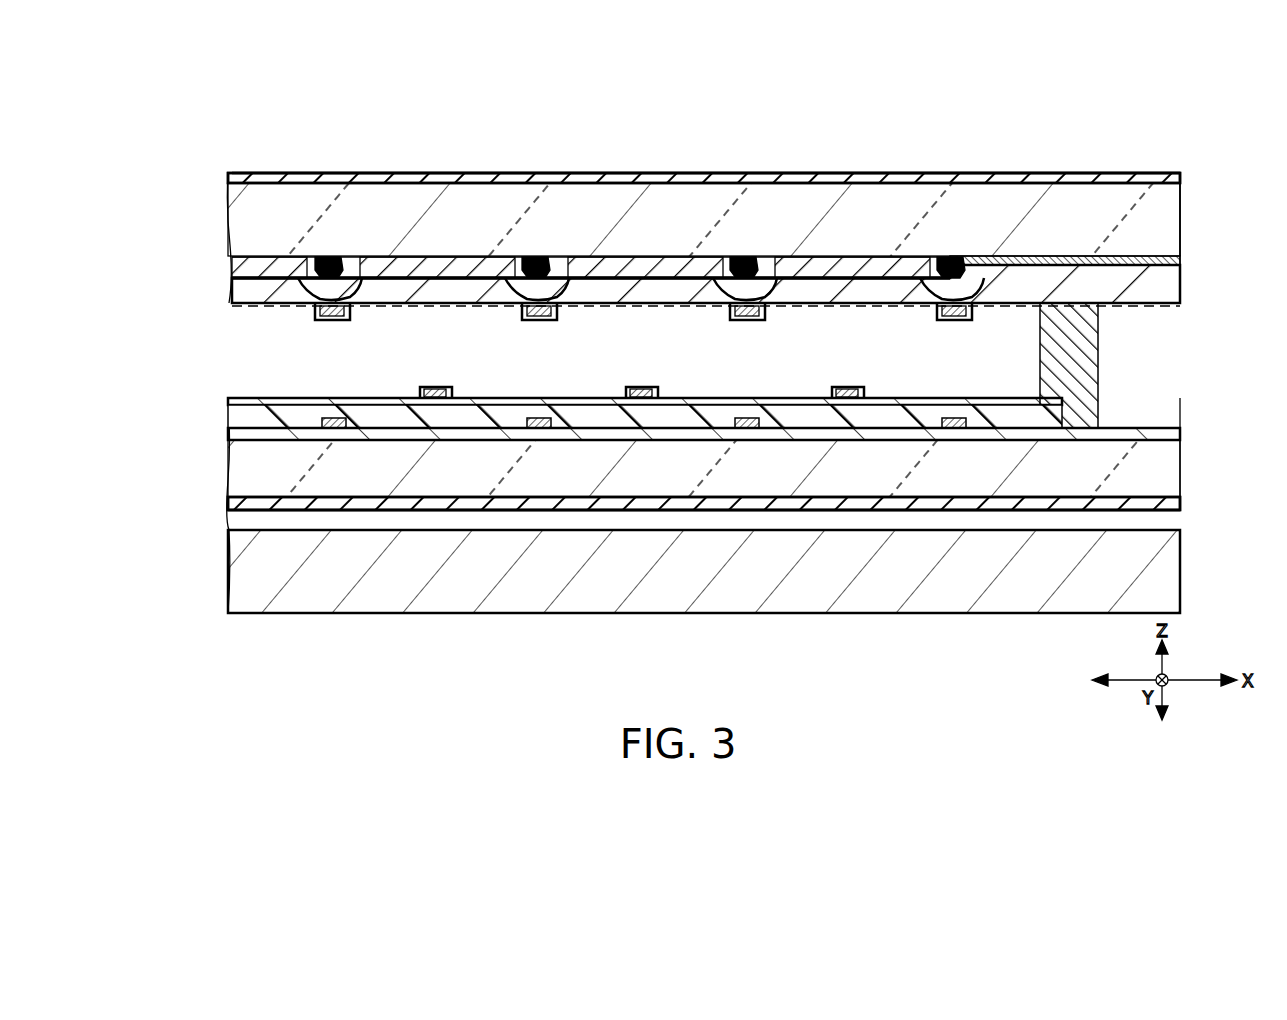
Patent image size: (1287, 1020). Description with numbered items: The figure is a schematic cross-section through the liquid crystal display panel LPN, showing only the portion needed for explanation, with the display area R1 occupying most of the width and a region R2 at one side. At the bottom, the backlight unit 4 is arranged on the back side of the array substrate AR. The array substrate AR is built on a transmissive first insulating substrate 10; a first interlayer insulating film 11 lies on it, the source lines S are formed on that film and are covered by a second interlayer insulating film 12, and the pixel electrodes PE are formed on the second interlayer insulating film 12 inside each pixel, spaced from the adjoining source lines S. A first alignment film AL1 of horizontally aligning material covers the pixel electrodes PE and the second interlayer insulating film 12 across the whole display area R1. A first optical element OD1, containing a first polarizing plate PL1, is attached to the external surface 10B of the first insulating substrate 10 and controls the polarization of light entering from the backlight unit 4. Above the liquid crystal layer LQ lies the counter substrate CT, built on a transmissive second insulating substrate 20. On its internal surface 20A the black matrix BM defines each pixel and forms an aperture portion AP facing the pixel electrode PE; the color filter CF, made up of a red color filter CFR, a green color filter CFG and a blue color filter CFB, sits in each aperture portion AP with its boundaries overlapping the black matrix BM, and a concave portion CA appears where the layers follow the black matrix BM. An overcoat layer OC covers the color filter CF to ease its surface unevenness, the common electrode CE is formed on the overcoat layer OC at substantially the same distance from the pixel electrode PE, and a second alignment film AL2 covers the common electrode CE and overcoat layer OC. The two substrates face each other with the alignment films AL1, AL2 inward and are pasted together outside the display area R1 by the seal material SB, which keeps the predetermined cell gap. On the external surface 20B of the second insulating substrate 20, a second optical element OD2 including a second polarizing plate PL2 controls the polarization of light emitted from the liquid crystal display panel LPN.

The display area R1 is at (950, 255).
The peripheral region R2 is at (1180, 170).
The aperture portion AP is at (558, 255).
The counter substrate CT is at (222, 230).
The array substrate AR is at (222, 466).
The liquid crystal layer LQ is at (268, 388).
The second insulating substrate 20 is at (1172, 216).
The internal surface of the second insulating substrate 20A is at (300, 280).
The external surface of the counter substrate 20B is at (258, 170).
The second optical element OD2 is at (265, 178).
The second polarizing plate PL2 is at (661, 188).
The liquid crystal display panel LPN is at (1192, 192).
The color filter CF is at (258, 269).
The red color filter CFR is at (282, 262).
The green color filter CFG is at (446, 265).
The blue color filter CFB is at (636, 265).
The black matrix BM is at (331, 258).
The concave portion CA is at (350, 292).
The overcoat layer OC is at (1175, 292).
The common electrode CE is at (304, 314).
The second alignment film AL2 is at (1098, 312).
The seal material SB is at (1090, 360).
The first alignment film AL1 is at (1025, 396).
The second interlayer insulating film 12 is at (985, 412).
The first interlayer insulating film 11 is at (1175, 433).
The first insulating substrate 10 is at (1175, 470).
The external surface of the array substrate 10B is at (262, 510).
The first optical element OD1 is at (262, 503).
The first polarizing plate PL1 is at (661, 512).
The backlight unit 4 is at (236, 578).
The pixel electrode PE is at (438, 400).
The source line S is at (335, 430).